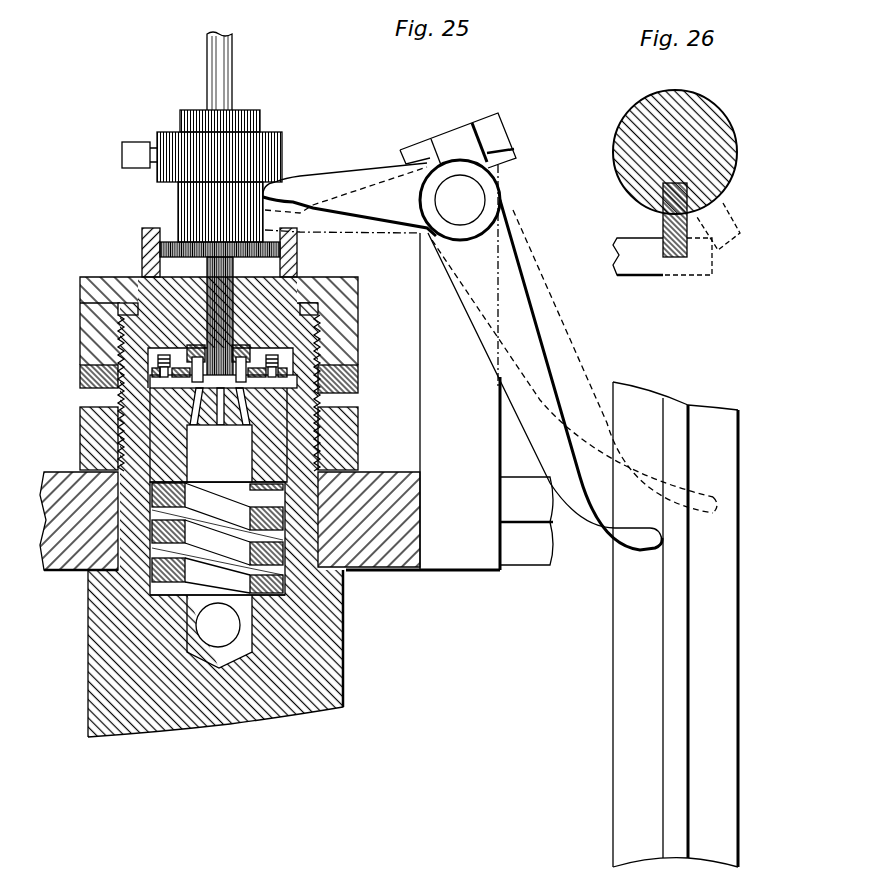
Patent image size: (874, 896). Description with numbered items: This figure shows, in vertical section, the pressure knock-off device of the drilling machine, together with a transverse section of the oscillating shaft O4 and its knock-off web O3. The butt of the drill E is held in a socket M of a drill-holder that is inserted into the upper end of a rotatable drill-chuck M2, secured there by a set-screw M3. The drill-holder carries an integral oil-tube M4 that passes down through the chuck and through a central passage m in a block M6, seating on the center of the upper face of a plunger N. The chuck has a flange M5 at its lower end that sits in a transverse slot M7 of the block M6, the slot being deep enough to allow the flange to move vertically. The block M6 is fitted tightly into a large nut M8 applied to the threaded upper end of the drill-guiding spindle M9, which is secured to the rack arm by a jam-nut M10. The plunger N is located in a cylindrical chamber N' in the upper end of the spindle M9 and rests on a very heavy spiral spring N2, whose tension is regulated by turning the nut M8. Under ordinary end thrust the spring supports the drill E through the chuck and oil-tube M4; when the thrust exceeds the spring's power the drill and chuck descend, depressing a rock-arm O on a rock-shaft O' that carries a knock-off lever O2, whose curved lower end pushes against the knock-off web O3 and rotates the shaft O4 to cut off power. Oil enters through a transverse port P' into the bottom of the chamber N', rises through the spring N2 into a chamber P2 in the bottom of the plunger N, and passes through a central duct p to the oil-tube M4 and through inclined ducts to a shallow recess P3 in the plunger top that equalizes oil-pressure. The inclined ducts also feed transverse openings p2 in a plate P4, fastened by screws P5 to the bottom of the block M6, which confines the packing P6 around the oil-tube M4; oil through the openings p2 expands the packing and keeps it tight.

In FIG. 25, the drill E is at (207, 70).
In FIG. 25, the socket M is at (240, 118).
In FIG. 25, the rotatable drill-chuck M2 is at (283, 148).
In FIG. 25, the set-screw M3 is at (122, 150).
In FIG. 25, the oil-tube M4 is at (234, 290).
In FIG. 25, the flange M5 is at (178, 218).
In FIG. 25, the block M6 is at (143, 277).
In FIG. 25, the transverse slot M7 is at (298, 259).
In FIG. 25, the large nut M8 is at (358, 331).
In FIG. 25, the drill-guiding spindle M9 is at (193, 653).
In FIG. 25, the jam-nut M10 is at (358, 427).
In FIG. 25, the plunger N is at (97, 438).
In FIG. 25, the cylindrical chamber N' is at (266, 605).
In FIG. 25, the spiral spring N2 is at (150, 576).
In FIG. 25, the rock-arm O is at (349, 189).
In FIG. 25, the rock-shaft O' is at (458, 176).
In FIG. 25, the knock-off lever O2 is at (572, 357).
In FIG. 26, the knock-off lever O2 is at (662, 256).
In FIG. 25, the knock-off web O3 is at (668, 603).
In FIG. 26, the knock-off web O3 is at (663, 222).
In FIG. 25, the oscillating shaft O4 is at (713, 636).
In FIG. 26, the oscillating shaft O4 is at (626, 186).
In FIG. 25, the transverse port P' is at (218, 625).
In FIG. 25, the chamber P2 is at (219, 453).
In FIG. 25, the shallow recess P3 is at (118, 402).
In FIG. 25, the plate P4 is at (268, 355).
In FIG. 25, the screws P5 is at (118, 378).
In FIG. 25, the packing P6 is at (221, 352).
In FIG. 25, the central perpendicular duct p is at (220, 417).
In FIG. 25, the transverse openings p2 is at (195, 357).
In FIG. 25, the central passage m is at (200, 325).